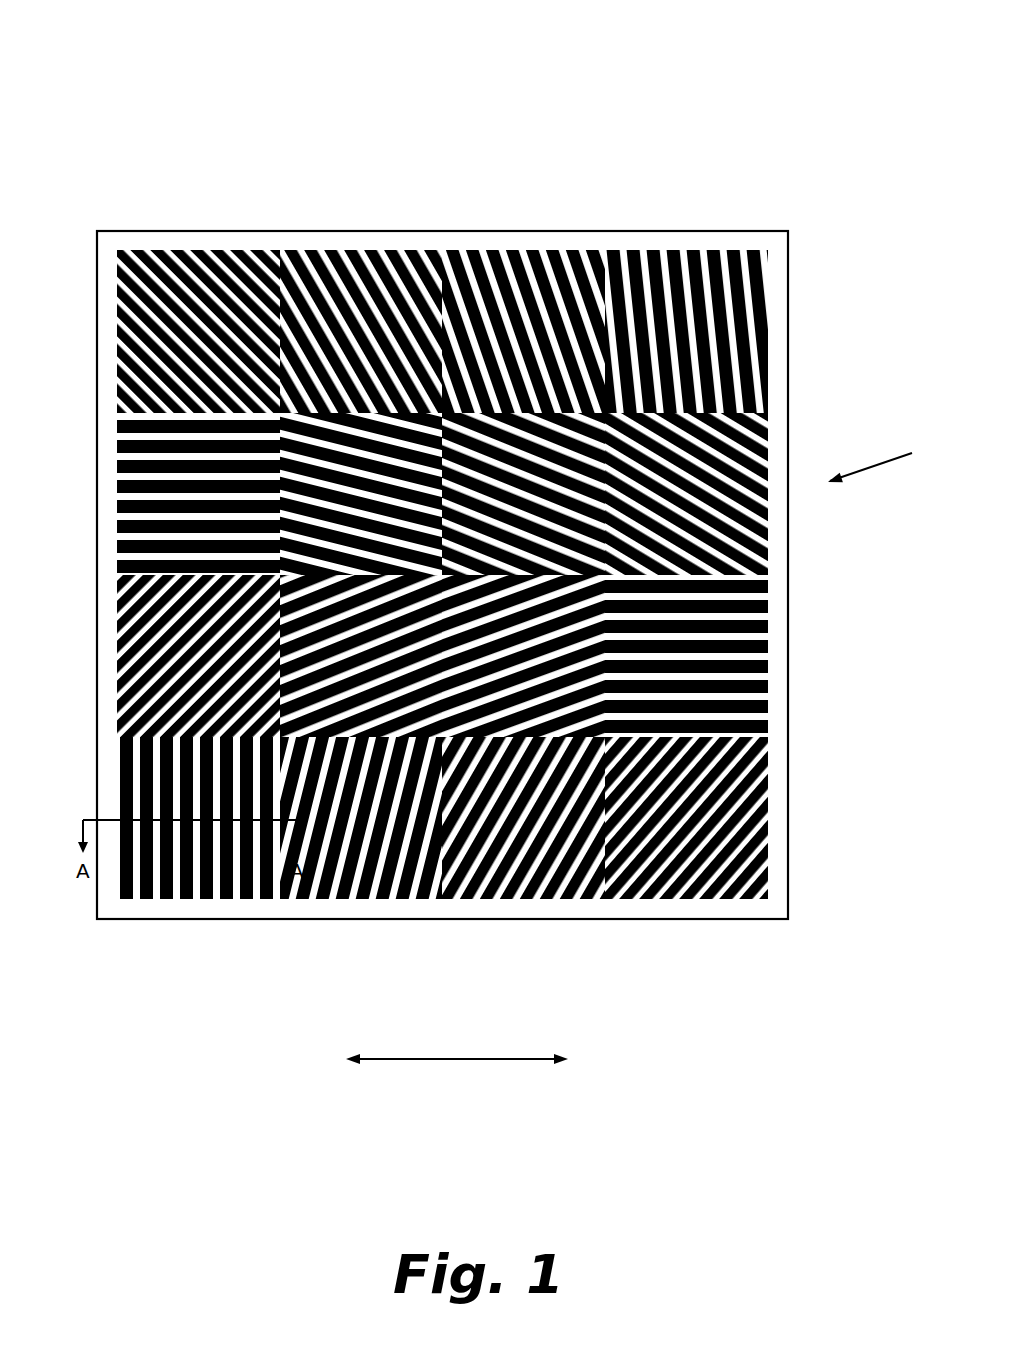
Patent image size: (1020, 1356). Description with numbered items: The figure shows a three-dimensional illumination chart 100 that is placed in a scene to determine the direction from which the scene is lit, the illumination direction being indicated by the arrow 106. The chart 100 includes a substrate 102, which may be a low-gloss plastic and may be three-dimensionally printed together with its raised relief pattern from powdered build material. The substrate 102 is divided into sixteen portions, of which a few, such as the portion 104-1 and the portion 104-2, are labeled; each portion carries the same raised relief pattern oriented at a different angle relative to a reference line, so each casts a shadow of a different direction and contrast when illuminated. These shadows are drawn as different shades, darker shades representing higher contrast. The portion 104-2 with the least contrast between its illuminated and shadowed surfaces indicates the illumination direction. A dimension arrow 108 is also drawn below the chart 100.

The three-dimensional illumination chart 100 is at (155, 78).
The substrate 102 is at (110, 563).
The portion 104-1 is at (118, 332).
The portion 104-2 is at (525, 712).
The arrow 106 is at (862, 470).
The width direction 108 is at (475, 1057).